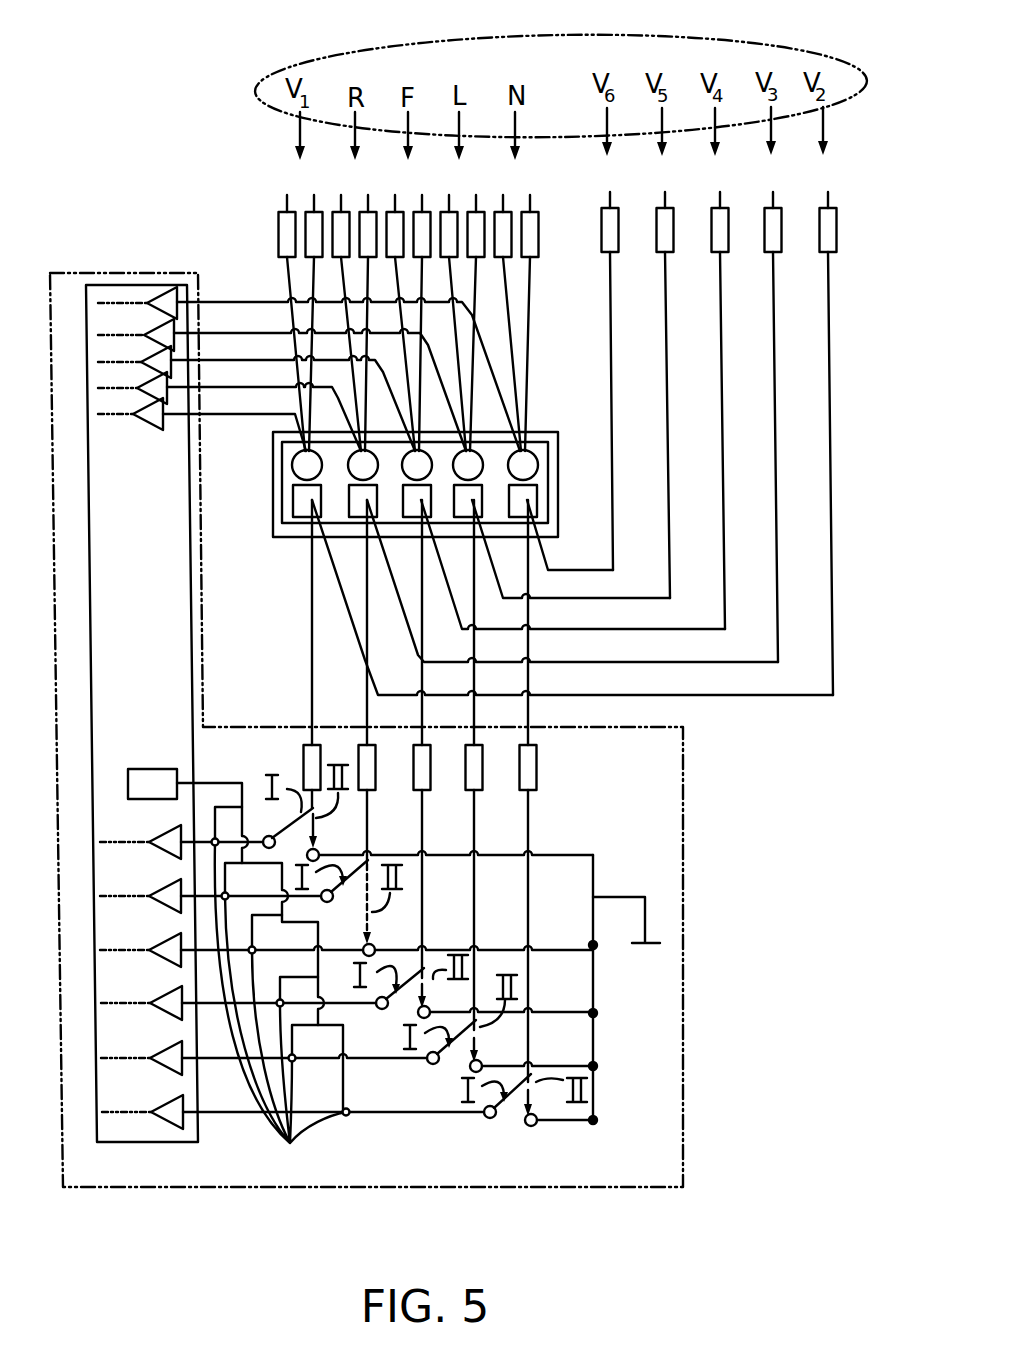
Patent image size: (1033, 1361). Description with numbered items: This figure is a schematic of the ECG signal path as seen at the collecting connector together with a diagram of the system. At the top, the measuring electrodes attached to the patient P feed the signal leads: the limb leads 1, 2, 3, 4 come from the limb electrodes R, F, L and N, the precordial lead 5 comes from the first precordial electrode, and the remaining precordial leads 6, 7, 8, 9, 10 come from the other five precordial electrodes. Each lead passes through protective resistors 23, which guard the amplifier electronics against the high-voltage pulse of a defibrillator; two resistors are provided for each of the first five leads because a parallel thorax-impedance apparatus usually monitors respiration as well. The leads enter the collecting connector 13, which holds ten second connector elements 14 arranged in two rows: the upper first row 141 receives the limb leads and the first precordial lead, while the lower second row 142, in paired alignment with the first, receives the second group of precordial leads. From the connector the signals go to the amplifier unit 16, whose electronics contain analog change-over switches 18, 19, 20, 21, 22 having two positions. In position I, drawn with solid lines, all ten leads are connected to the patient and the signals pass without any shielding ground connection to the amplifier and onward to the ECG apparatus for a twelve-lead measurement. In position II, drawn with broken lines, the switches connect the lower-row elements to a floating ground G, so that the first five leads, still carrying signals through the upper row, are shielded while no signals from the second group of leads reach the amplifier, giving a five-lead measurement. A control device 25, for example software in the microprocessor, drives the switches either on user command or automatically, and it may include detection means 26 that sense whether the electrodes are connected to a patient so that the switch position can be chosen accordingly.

The limb signal lead 1 is at (506, 283).
The limb signal lead 2 is at (458, 232).
The limb signal lead 3 is at (413, 232).
The limb signal lead 4 is at (367, 277).
The precordial signal lead 5 is at (310, 277).
The precordial signal lead 6 is at (608, 281).
The precordial signal lead 7 is at (665, 279).
The precordial signal lead 8 is at (720, 279).
The precordial signal lead 9 is at (771, 279).
The precordial signal lead 10 is at (826, 279).
The collecting connector 13 is at (273, 503).
The second connector elements 14 is at (449, 482).
The first row of second connector elements 141 is at (548, 462).
The second row of second connector elements 142 is at (548, 498).
The amplifier unit 16 is at (129, 292).
The change-over switch 18 is at (286, 835).
The change-over switch 19 is at (336, 888).
The change-over switch 20 is at (386, 1010).
The change-over switch 21 is at (440, 1064).
The change-over switch 22 is at (496, 1116).
The protective resistors 23 is at (312, 222).
The control device 25 is at (152, 768).
The detection means 26 is at (281, 1010).
The patient P is at (697, 44).
The floating ground G is at (658, 950).